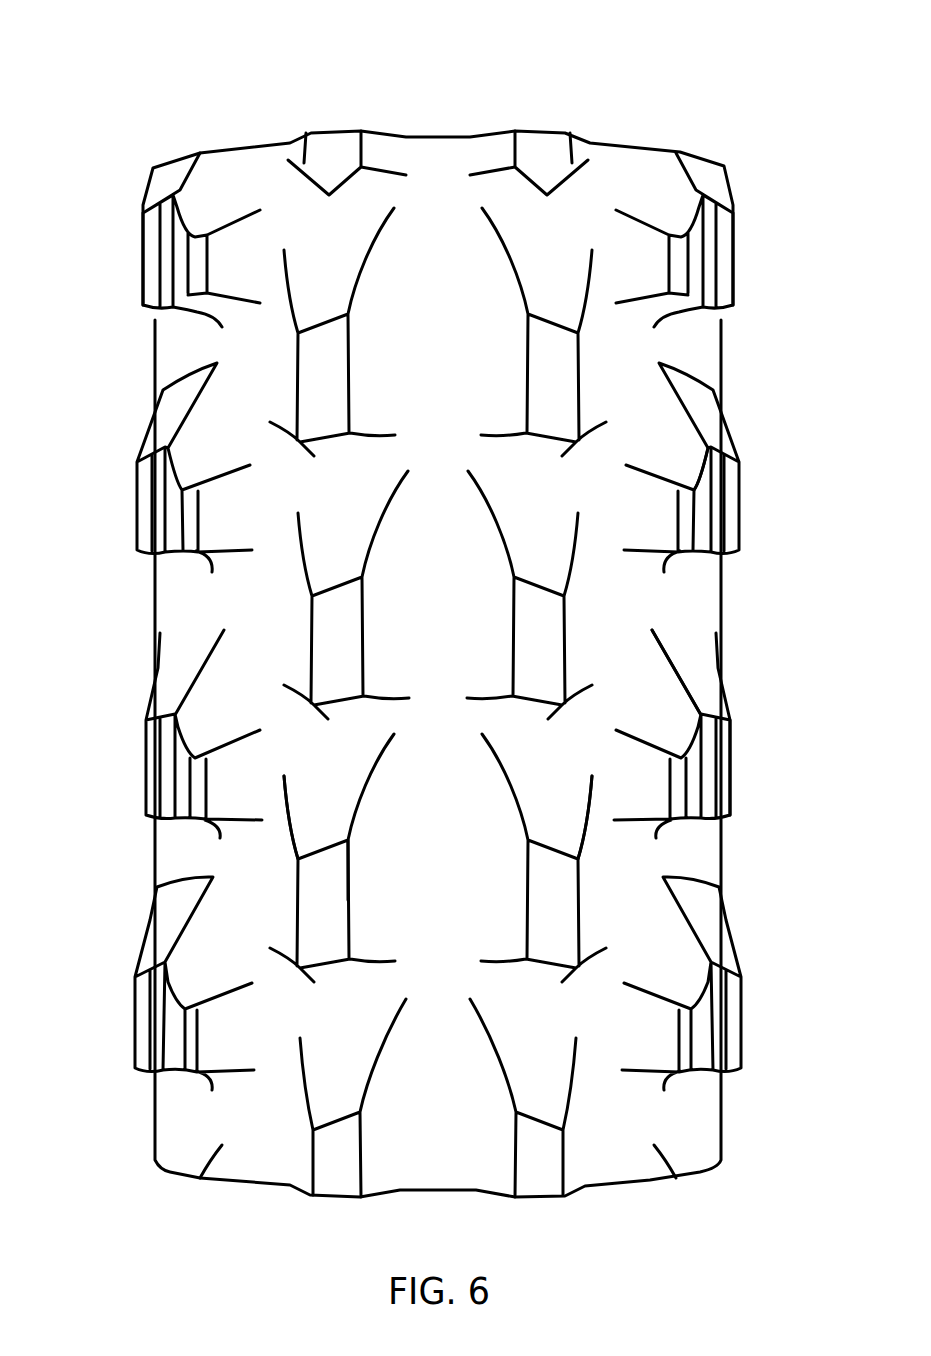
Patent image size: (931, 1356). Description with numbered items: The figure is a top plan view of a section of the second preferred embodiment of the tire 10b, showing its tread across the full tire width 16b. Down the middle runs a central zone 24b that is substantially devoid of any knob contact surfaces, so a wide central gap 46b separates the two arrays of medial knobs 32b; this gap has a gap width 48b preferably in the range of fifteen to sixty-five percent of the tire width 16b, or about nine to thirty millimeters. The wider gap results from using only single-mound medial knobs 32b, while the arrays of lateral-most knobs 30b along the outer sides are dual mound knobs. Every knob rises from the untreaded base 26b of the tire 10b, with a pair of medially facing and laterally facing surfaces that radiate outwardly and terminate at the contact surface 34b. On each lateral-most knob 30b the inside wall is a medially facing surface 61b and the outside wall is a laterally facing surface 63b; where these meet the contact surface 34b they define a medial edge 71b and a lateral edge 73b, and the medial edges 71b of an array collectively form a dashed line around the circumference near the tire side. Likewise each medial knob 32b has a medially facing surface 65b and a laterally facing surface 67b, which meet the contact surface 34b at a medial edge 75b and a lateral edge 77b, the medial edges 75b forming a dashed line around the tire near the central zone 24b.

The tire 10b is at (84, 204).
The tire width 16b is at (740, 17).
The central zone 24b is at (480, 108).
The untreaded base 26b is at (435, 548).
The lateral-most knobs 30b is at (733, 1076).
The medial knobs 32b is at (290, 382).
The contact surface 34b is at (722, 745).
The central gap 46b is at (436, 1165).
The gap width 48b is at (515, 648).
The medially facing surface 61b is at (650, 780).
The laterally facing surface 63b is at (733, 770).
The medially facing surface 65b is at (357, 902).
The laterally facing surface 67b is at (288, 877).
The medial edge 71b is at (660, 516).
The lateral edge 73b is at (745, 510).
The medial edge 75b is at (525, 877).
The lateral edge 77b is at (583, 887).